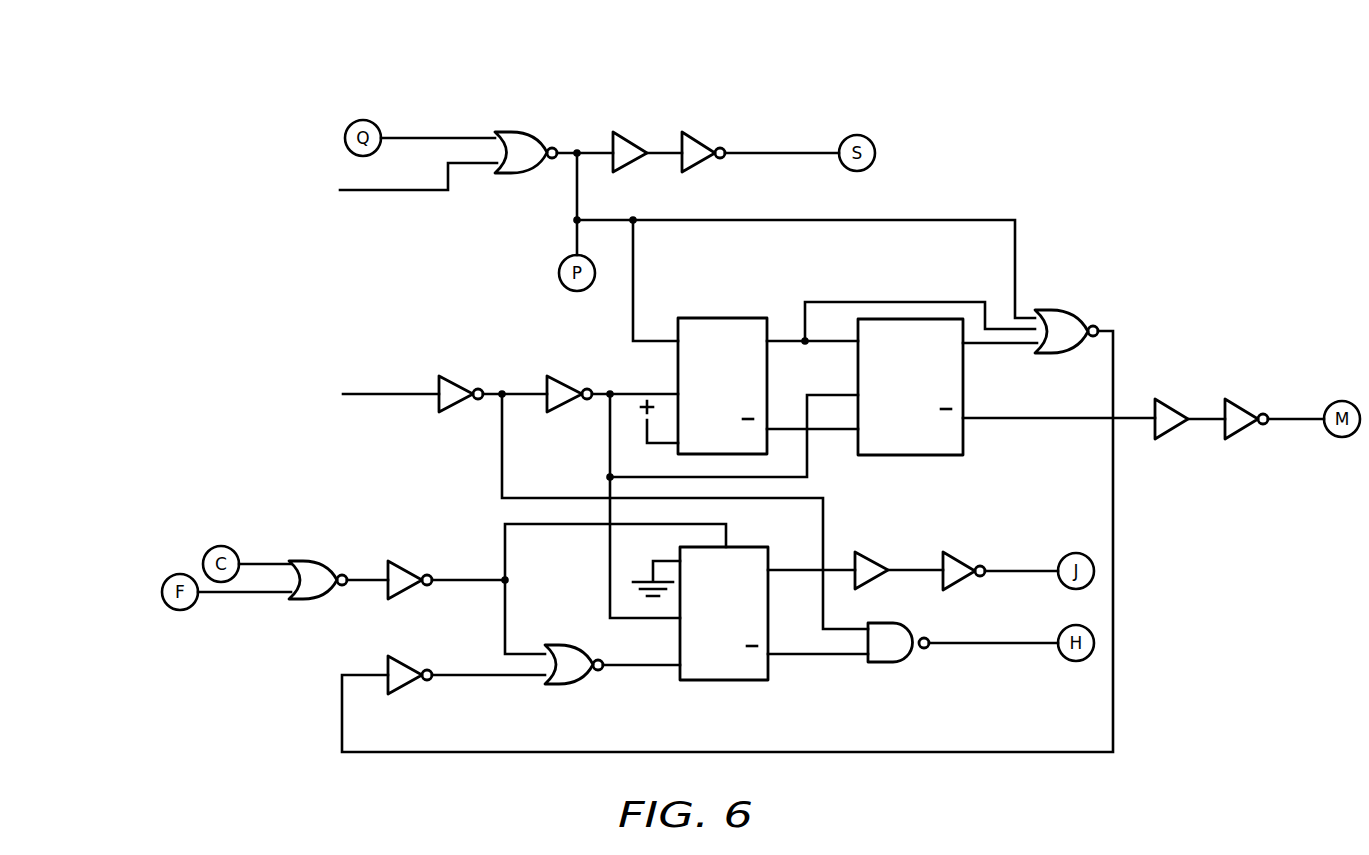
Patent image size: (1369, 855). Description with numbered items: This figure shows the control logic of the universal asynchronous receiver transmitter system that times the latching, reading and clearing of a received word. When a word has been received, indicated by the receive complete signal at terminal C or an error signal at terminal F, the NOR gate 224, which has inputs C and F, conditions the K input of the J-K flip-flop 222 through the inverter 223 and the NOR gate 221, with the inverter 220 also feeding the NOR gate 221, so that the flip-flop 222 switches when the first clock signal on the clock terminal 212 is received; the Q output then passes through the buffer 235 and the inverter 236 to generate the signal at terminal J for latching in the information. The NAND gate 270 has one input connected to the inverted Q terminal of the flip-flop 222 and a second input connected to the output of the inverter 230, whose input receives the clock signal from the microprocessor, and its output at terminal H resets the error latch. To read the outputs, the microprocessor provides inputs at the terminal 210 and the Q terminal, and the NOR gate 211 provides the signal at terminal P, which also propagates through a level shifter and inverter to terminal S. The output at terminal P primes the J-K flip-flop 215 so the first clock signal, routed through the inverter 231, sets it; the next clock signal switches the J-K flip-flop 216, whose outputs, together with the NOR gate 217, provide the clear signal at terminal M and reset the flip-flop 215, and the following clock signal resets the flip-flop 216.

The input terminal 210 is at (370, 190).
The NOR gate 211 is at (520, 131).
The clock terminal 212 is at (363, 394).
The J-K flip-flop 215 is at (708, 318).
The J-K flip-flop 216 is at (910, 455).
The NOR gate 217 is at (1060, 310).
The inverter 220 is at (405, 658).
The NOR gate 221 is at (563, 684).
The J-K flip-flop 222 is at (725, 680).
The inverter 223 is at (401, 564).
The NOR gate 224 is at (310, 561).
The inverter 230 is at (457, 379).
The inverter 231 is at (556, 378).
The buffer 235 is at (868, 553).
The inverter 236 is at (962, 554).
The NAND gate 270 is at (890, 662).